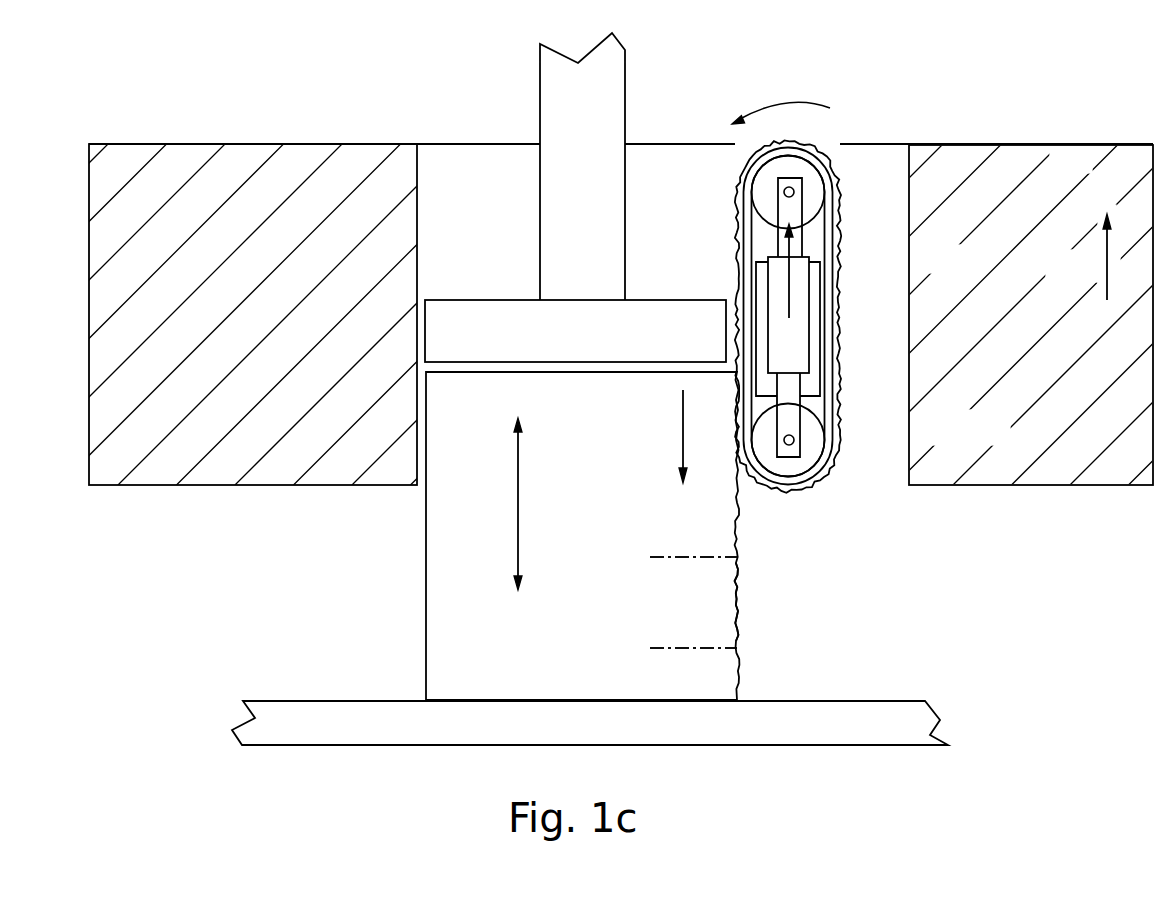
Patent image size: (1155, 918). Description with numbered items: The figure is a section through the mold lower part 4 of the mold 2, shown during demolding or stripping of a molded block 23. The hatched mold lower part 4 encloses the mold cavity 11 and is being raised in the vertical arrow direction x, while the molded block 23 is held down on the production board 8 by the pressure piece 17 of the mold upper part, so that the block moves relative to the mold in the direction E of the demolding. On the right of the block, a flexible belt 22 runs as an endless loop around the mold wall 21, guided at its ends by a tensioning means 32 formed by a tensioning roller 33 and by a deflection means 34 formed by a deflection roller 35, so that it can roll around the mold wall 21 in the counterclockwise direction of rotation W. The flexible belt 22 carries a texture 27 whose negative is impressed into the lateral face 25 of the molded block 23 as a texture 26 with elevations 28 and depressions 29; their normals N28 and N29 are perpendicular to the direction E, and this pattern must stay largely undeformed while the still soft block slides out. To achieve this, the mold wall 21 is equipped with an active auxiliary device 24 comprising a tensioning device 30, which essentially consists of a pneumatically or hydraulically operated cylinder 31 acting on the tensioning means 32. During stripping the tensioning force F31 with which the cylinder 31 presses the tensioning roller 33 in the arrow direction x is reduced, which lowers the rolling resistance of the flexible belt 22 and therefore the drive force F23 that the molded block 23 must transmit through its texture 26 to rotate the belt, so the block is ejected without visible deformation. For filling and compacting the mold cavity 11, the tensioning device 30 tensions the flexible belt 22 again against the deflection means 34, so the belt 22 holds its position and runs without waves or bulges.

The mold 2 is at (1040, 68).
The mold lower part 4 is at (1055, 165).
The production board 8 is at (855, 720).
The mold cavity 11 is at (472, 180).
The pressure piece 17 is at (650, 322).
The mold wall 21 is at (822, 230).
The flexible belt 22 is at (830, 208).
The molded block 23 is at (447, 560).
The active auxiliary device 24 is at (800, 325).
The lateral face 25 is at (737, 583).
The texture 26 is at (737, 625).
The texture 27 is at (800, 492).
The elevations 28 is at (737, 648).
The depressions 29 is at (737, 557).
The tensioning device 30 is at (800, 294).
The cylinder 31 is at (795, 353).
The tensioning means 32 is at (829, 142).
The tensioning roller 33 is at (813, 178).
The deflection means 34 is at (880, 440).
The deflection roller 35 is at (810, 438).
The direction of the demolding E is at (518, 500).
The counterclockwise direction of rotation W is at (780, 100).
The vertical arrow direction x is at (1107, 262).
The drive force F23 is at (683, 432).
The tensioning force F31 is at (790, 279).
The normal of the elevations N28 is at (682, 647).
The normal of the depressions N29 is at (668, 555).